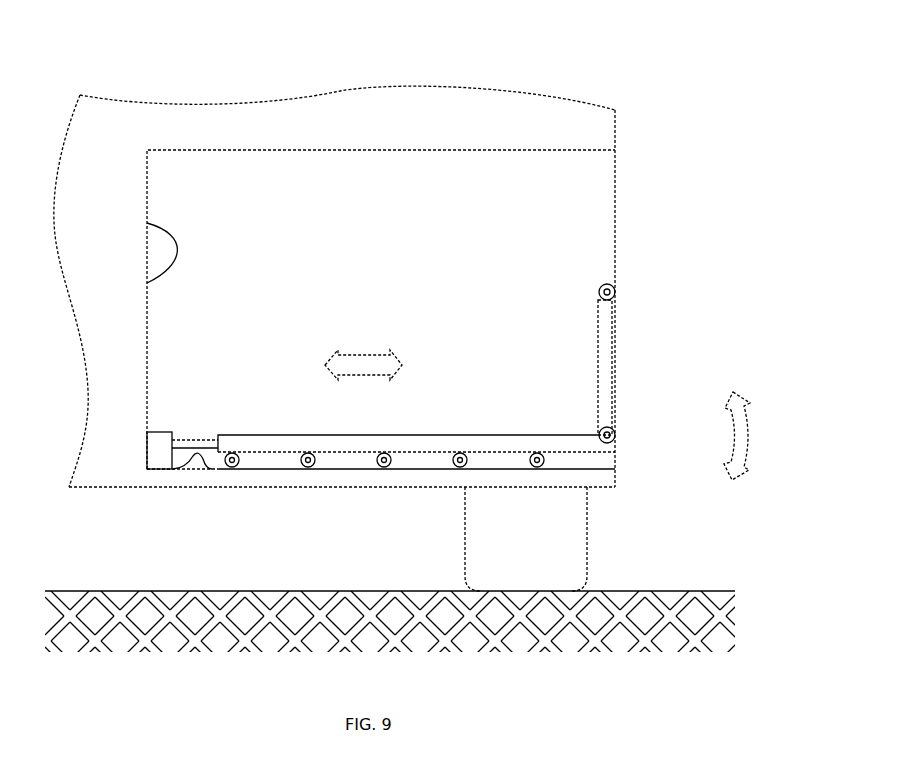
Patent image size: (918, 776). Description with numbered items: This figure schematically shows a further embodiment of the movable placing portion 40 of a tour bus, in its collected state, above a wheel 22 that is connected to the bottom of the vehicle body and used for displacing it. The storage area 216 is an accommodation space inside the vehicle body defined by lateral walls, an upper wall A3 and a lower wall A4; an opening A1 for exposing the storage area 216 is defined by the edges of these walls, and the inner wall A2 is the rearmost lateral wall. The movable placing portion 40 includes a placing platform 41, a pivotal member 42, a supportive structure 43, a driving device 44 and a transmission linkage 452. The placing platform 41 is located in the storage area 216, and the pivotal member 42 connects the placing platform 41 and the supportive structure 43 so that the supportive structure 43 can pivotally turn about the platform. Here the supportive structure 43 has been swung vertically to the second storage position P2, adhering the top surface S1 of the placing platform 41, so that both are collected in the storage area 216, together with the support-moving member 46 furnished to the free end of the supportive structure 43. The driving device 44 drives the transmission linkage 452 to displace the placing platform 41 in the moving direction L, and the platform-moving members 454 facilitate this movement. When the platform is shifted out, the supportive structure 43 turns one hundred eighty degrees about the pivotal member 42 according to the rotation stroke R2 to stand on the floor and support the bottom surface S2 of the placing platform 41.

The storage area 216 is at (292, 188).
The opening A1 is at (620, 232).
The inner wall A2 is at (147, 283).
The upper wall A3 is at (545, 150).
The lower wall A4 is at (196, 458).
The second storage position P2 is at (593, 331).
The support-moving member 46 is at (615, 291).
The supportive structure 43 is at (605, 360).
The pivotal member 42 is at (615, 433).
The placing platform 41 is at (537, 437).
The movable placing portion 40 is at (622, 453).
The driving device 44 is at (146, 452).
The transmission linkage 452 is at (197, 443).
The platform-moving members 454 is at (236, 467).
The wheel 22 is at (570, 547).
The top surface S1 is at (586, 437).
The bottom surface S2 is at (571, 452).
The moving direction L is at (365, 373).
The rotation stroke R2 is at (743, 442).